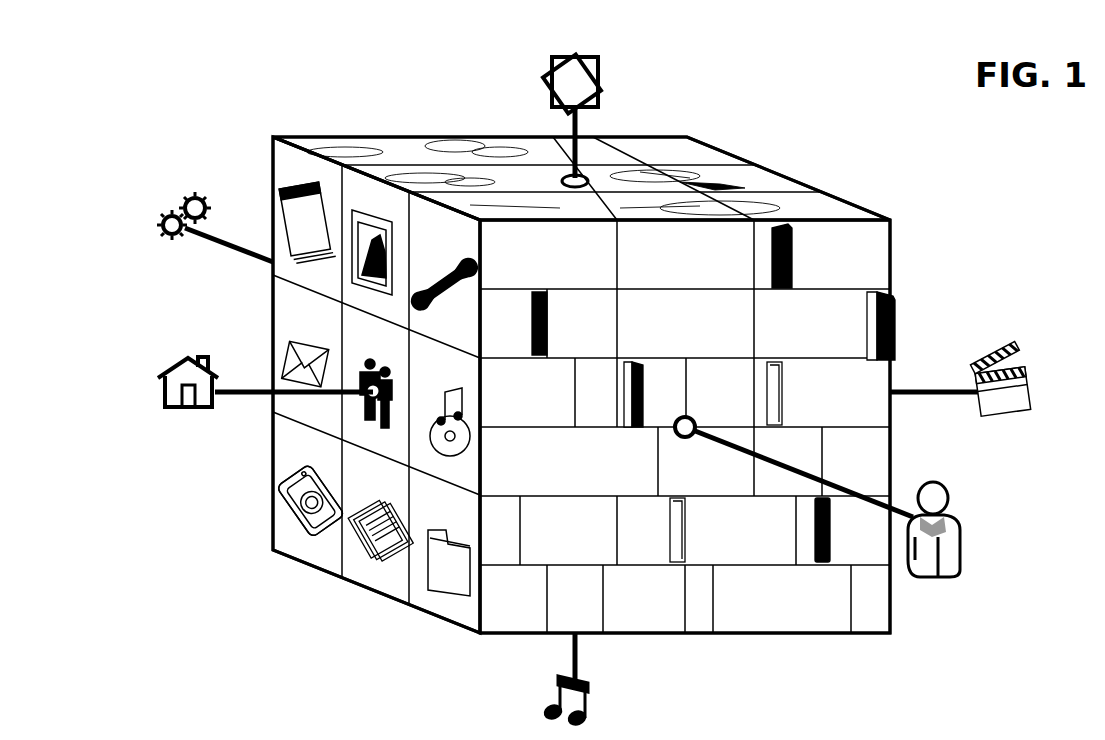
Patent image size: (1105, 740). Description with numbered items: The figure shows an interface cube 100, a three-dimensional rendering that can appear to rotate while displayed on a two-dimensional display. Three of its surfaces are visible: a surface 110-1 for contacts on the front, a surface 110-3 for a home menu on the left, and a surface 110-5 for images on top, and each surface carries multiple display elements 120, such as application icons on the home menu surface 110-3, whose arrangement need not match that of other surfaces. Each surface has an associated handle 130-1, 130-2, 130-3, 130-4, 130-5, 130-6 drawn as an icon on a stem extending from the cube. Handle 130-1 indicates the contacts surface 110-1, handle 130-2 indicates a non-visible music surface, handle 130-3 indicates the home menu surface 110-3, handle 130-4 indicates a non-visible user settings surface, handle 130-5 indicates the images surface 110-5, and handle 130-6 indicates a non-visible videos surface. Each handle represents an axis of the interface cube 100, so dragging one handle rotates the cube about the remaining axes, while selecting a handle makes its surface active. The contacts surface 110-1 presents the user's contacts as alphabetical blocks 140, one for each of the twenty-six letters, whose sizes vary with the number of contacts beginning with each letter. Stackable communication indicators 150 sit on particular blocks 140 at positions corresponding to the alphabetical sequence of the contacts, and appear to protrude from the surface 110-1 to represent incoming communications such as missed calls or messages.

The interface cube 100 is at (247, 82).
The surface for contacts 110-1 is at (892, 605).
The surface for home menu 110-3 is at (367, 590).
The surface for images 110-5 is at (797, 175).
The display element 120 is at (297, 503).
The handle for contacts surface 130-1 is at (957, 532).
The handle for music surface 130-2 is at (588, 698).
The handle for home menu surface 130-3 is at (190, 357).
The handle for user settings surface 130-4 is at (187, 197).
The handle for images surface 130-5 is at (605, 93).
The handle for videos surface 130-6 is at (1017, 355).
The alphabetical block 140 is at (777, 633).
The communication indicator 150 is at (892, 315).